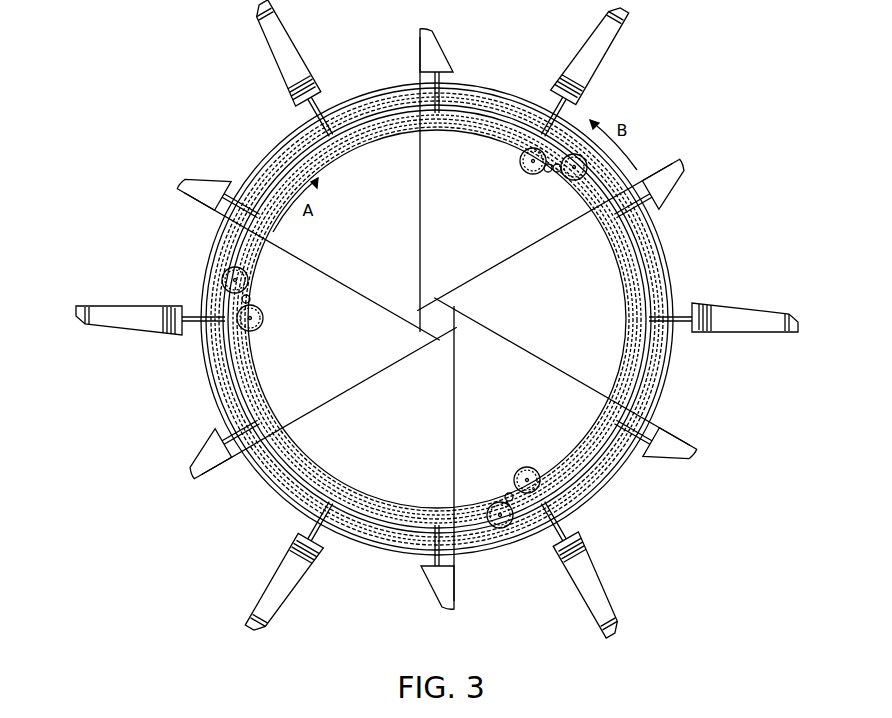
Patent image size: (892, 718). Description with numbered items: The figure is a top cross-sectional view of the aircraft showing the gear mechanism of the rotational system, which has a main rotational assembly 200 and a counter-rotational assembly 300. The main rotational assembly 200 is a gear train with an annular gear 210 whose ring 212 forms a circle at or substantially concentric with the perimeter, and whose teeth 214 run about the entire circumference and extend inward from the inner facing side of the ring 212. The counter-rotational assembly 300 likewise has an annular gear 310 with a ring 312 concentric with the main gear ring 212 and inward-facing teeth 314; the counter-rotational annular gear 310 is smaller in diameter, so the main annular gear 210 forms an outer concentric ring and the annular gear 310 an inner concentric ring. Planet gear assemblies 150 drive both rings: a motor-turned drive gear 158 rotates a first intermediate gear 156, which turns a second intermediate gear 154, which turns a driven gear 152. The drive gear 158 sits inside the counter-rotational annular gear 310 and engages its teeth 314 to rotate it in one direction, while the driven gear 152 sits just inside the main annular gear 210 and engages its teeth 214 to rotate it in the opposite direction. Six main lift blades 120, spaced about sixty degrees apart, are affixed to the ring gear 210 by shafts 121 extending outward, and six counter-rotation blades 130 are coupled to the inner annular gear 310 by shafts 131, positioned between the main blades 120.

The main lift blade 120 is at (120, 318).
The shaft 121 is at (191, 326).
The counter-rotation blade 130 is at (200, 460).
The shaft 131 is at (243, 455).
The planet gear assembly 150 is at (506, 465).
The driven gear 152 is at (490, 512).
The second intermediate gear 154 is at (504, 496).
The first intermediate gear 156 is at (510, 491).
The drive gear 158 is at (537, 471).
The main rotational assembly 200 is at (216, 258).
The annular gear 210 is at (643, 238).
The ring 212 is at (658, 363).
The teeth 214 is at (222, 332).
The counter-rotational assembly 300 is at (377, 120).
The annular gear 310 is at (643, 287).
The ring 312 is at (637, 400).
The teeth 314 is at (257, 327).